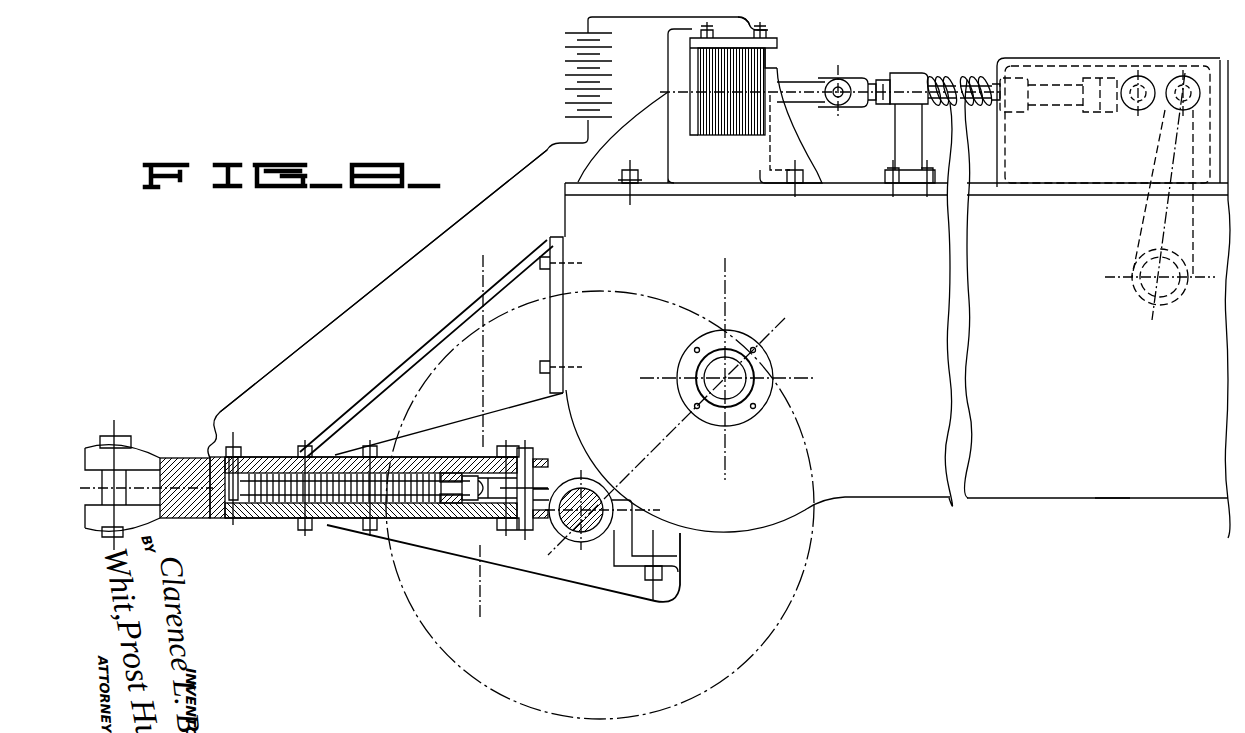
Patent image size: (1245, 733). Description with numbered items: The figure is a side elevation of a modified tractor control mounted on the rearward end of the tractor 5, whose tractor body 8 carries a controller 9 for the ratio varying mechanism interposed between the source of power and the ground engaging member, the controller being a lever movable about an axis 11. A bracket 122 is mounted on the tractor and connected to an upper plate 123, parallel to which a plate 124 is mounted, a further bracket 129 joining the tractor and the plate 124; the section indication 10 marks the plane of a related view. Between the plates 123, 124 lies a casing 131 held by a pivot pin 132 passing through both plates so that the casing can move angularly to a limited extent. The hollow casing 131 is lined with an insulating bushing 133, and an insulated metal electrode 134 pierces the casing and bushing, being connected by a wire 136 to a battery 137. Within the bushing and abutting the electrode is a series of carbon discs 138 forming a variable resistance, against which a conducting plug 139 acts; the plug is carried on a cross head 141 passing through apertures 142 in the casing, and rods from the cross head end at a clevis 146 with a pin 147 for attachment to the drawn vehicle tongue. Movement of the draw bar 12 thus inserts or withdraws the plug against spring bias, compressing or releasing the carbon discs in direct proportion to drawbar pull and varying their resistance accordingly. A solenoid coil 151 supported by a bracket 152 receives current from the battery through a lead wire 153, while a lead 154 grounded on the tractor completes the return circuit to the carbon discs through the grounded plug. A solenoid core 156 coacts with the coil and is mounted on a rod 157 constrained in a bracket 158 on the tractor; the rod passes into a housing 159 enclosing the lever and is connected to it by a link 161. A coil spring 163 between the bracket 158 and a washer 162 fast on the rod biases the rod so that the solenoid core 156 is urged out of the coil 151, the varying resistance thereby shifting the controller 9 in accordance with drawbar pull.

The tractor 5 is at (1108, 511).
The tractor body 8 is at (1017, 365).
The controller 9 is at (1135, 222).
The section line 10 is at (460, 621).
The axis 11 is at (1133, 288).
The draw bar 12 is at (285, 535).
The bracket 122 is at (407, 352).
The upper plate 123 is at (405, 460).
The plate 124 is at (256, 522).
The bracket 129 is at (555, 578).
The casing 131 is at (410, 505).
The pivot pin 132 is at (532, 452).
The insulating bushing 133 is at (268, 458).
The electrode 134 is at (238, 456).
The wire 136 is at (288, 355).
The battery 137 is at (565, 62).
The carbon discs 138 is at (338, 488).
The conducting plug 139 is at (430, 483).
The cross head 141 is at (453, 503).
The apertures 142 is at (478, 505).
The clevis 146 is at (172, 448).
The pin 147 is at (122, 440).
The solenoid coil 151 is at (740, 125).
The bracket 152 is at (790, 129).
The lead wire 153 is at (658, 18).
The lead 154 is at (667, 63).
The solenoid core 156 is at (795, 85).
The rod 157 is at (873, 86).
The bracket 158 is at (893, 130).
The housing 159 is at (1078, 60).
The link 161 is at (1155, 110).
The washer 162 is at (985, 72).
The coil spring 163 is at (943, 78).